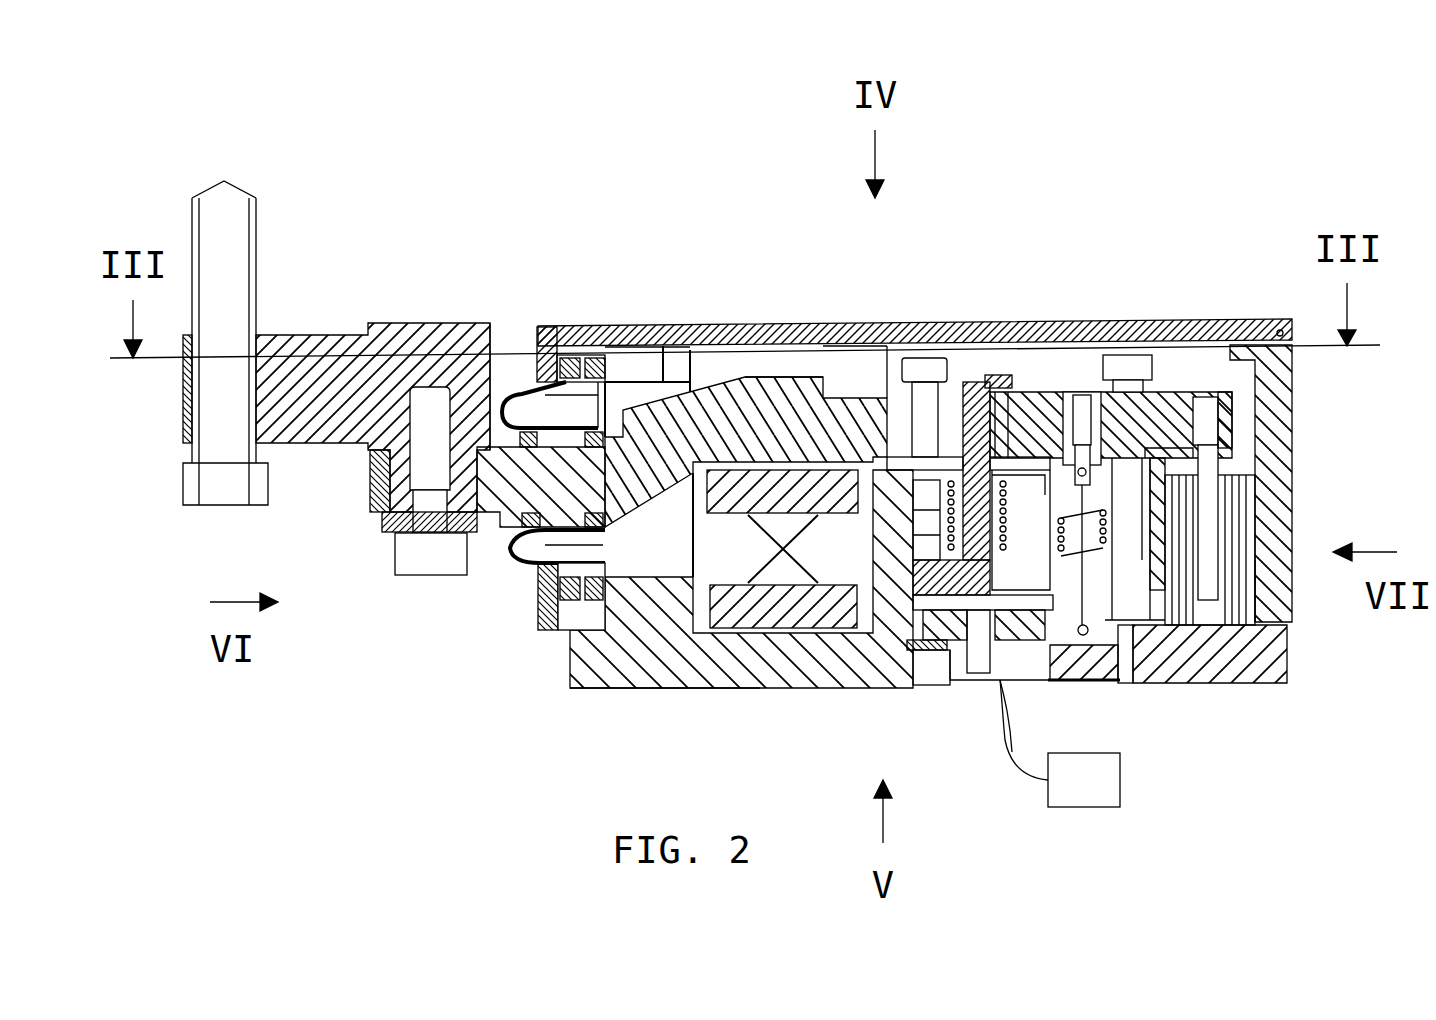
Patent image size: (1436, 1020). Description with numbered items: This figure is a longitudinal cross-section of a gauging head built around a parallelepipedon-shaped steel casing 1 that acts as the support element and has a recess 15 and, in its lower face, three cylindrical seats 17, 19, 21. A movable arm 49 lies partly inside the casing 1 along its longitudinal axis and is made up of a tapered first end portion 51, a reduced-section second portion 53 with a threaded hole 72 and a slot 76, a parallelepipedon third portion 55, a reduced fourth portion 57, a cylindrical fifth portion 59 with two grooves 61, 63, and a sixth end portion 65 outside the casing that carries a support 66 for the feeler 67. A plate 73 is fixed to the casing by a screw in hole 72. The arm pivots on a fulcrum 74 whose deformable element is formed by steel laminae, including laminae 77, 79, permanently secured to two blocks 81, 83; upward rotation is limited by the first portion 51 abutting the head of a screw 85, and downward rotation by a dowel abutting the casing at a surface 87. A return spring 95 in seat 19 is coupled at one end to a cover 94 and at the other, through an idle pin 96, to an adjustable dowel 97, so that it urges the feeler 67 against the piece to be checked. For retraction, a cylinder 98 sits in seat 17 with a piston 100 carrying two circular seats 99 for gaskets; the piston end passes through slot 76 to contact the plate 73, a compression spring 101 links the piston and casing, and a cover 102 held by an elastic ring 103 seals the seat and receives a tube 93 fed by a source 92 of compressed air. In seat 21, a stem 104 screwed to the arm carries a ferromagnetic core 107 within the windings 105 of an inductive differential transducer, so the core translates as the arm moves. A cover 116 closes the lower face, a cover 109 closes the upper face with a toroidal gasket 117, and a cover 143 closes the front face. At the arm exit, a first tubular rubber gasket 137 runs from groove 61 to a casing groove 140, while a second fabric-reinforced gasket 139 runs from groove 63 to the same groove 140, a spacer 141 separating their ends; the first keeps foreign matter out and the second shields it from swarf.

The casing 1 is at (605, 672).
The recess 15 is at (848, 345).
The seat 17 is at (998, 655).
The seat 19 is at (1066, 670).
The seat 21 is at (1268, 610).
The arm 49 is at (490, 537).
The first end portion 51 is at (1255, 345).
The second portion 53 is at (1082, 395).
The third portion 55 is at (800, 326).
The fourth portion 57 is at (665, 380).
The fifth portion 59 is at (497, 395).
The groove 61 is at (700, 670).
The groove 63 is at (525, 548).
The sixth end portion 65 is at (375, 488).
The support 66 is at (290, 335).
The feeler 67 is at (232, 183).
The threaded hole 72 is at (910, 358).
The plate 73 is at (968, 382).
The fulcrum 74 is at (928, 652).
The slot 76 is at (1003, 392).
The steel lamina 77 is at (770, 580).
The steel lamina 79 is at (765, 528).
The block 81 is at (745, 380).
The block 83 is at (780, 668).
The screw 85 is at (1172, 448).
The surface 87 is at (1175, 358).
The source of compressed air 92 is at (1098, 790).
The tube 93 is at (1013, 778).
The cover 94 is at (1105, 655).
The return spring 95 is at (1052, 400).
The idle pin 96 is at (1150, 400).
The adjustable dowel 97 is at (1112, 392).
The cylinder 98 is at (1035, 680).
The circular seats 99 is at (868, 562).
The piston 100 is at (1012, 752).
The compression spring 101 is at (882, 358).
The cover 102 is at (995, 665).
The elastic ring 103 is at (950, 648).
The stem 104 is at (1255, 440).
The windings 105 is at (1255, 478).
The core 107 is at (1162, 630).
The cover 109 is at (567, 338).
The cover 116 is at (1250, 683).
The toroidal-shaped gasket 117 is at (646, 335).
The first flexible sealing gasket 137 is at (540, 598).
The second flexible sealing gasket 139 is at (504, 395).
The groove 140 is at (567, 630).
The spacer 141 is at (672, 685).
The cover 143 is at (547, 335).